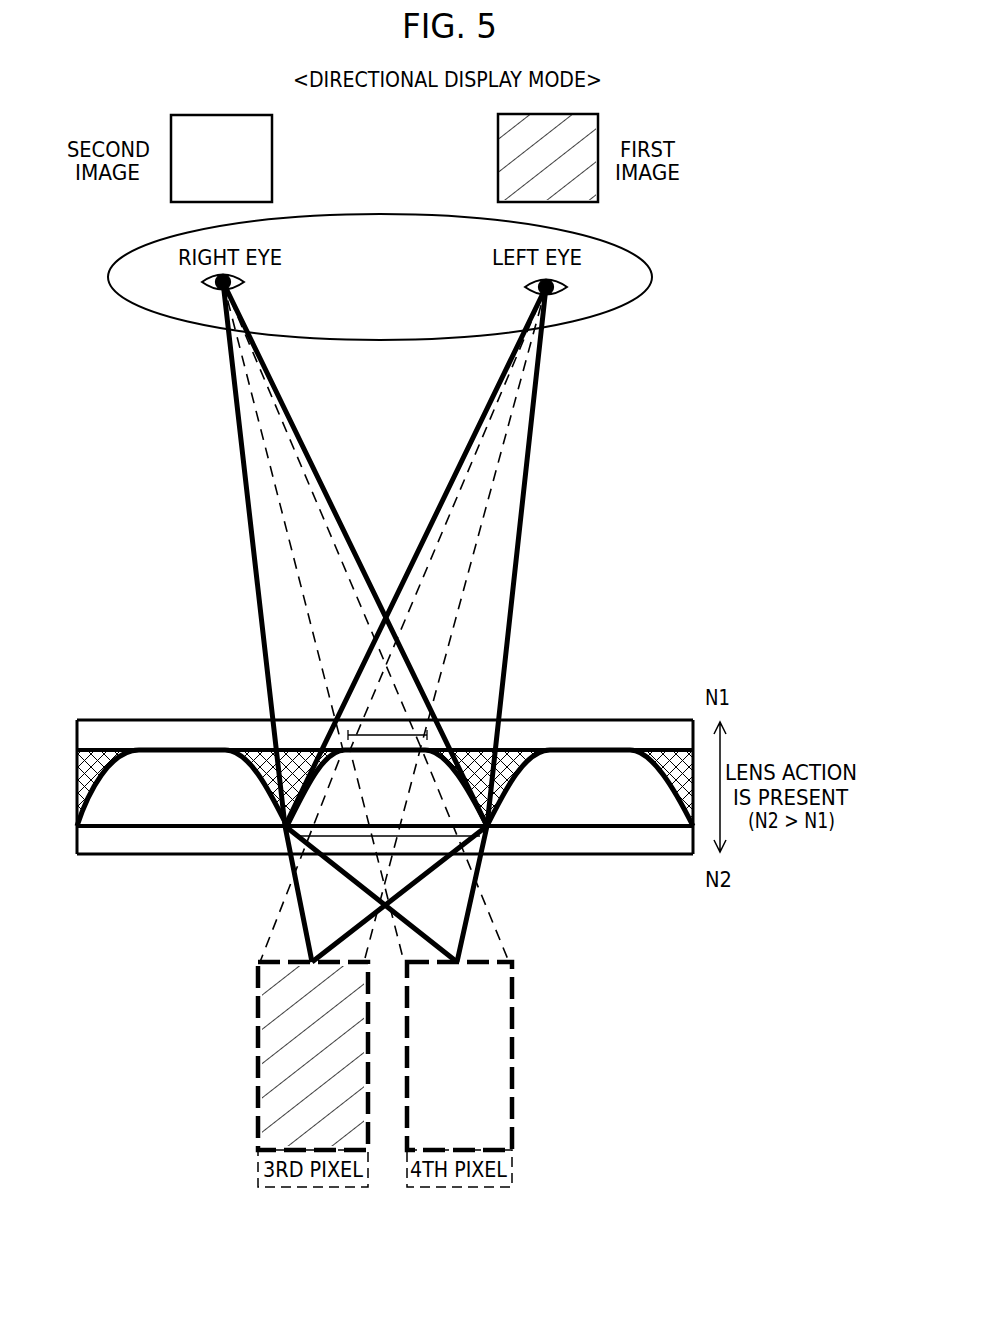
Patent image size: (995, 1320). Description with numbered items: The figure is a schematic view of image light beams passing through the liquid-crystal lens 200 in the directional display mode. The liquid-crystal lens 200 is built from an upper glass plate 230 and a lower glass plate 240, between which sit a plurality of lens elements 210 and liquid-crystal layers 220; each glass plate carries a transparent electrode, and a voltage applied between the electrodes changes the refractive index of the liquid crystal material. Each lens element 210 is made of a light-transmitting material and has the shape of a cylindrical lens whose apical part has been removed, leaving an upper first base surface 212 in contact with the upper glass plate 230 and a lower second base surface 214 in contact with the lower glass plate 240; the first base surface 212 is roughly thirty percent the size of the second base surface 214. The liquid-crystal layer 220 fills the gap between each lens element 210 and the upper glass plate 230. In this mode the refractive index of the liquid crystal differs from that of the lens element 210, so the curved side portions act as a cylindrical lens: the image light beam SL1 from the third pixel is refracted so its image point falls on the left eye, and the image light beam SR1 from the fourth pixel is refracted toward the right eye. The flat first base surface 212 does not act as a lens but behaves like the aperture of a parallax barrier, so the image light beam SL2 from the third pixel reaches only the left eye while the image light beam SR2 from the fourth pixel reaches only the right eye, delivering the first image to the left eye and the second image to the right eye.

The liquid-crystal lens 200 is at (70, 720).
The lens element 210 is at (195, 803).
The first base surface 212 is at (388, 735).
The second base surface 214 is at (387, 838).
The liquid-crystal layer 220 is at (262, 749).
The upper glass plate 230 is at (98, 720).
The lower glass plate 240 is at (102, 857).
The image light beam SR1 is at (257, 578).
The image light beam SR2 is at (280, 507).
The image light beam SL1 is at (513, 578).
The image light beam SL2 is at (480, 528).